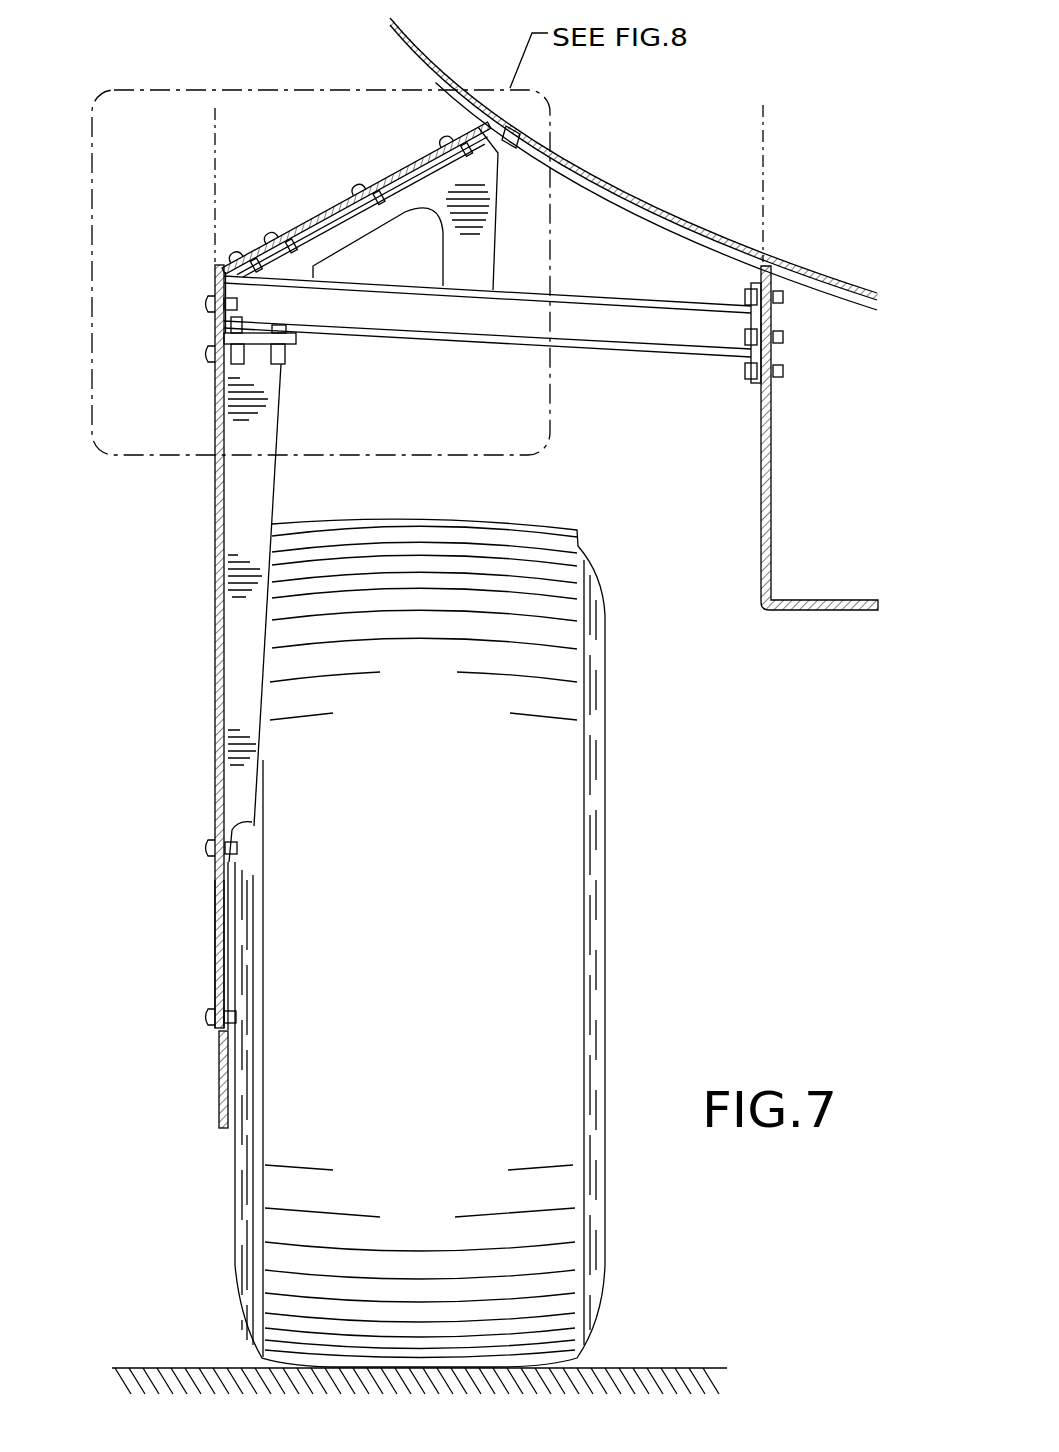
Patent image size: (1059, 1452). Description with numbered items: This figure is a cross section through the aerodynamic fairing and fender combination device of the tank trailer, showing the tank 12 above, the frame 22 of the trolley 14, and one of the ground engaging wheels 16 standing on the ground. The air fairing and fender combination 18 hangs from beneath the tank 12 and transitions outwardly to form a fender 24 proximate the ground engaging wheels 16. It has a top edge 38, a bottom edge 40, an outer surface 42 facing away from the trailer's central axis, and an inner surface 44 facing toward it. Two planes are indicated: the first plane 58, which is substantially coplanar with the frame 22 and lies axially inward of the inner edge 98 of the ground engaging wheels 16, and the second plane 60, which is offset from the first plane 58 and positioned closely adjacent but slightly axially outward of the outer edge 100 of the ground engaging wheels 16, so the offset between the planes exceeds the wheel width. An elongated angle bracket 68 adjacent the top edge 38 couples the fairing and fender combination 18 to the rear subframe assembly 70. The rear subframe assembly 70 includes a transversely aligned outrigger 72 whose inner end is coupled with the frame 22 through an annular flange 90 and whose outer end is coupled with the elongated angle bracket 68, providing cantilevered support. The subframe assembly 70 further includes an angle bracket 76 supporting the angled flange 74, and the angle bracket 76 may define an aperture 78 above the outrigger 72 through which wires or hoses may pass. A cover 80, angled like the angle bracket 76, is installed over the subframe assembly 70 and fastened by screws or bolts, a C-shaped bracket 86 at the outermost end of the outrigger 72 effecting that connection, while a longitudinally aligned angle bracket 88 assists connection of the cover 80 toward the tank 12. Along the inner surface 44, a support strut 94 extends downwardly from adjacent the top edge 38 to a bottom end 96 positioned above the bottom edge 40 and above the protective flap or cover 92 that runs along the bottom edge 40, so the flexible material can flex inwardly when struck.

The tank 12 is at (402, 45).
The trolley 14 is at (741, 438).
The frame 22 is at (759, 515).
The ground engaging wheels 16 is at (414, 943).
The air fairing and fender combination 18 is at (134, 646).
The fender 24 is at (216, 619).
The top edge 38 is at (174, 270).
The bottom edge 40 is at (184, 1103).
The outer surface 42 is at (215, 912).
The inner surface 44 is at (222, 948).
The first plane 58 is at (763, 176).
The second plane 60 is at (213, 178).
The elongated angle bracket 68 is at (222, 332).
The rear subframe assembly 70 is at (487, 351).
The outrigger 72 is at (596, 360).
The angled flange 74 is at (383, 190).
The angle bracket 76 is at (467, 270).
The aperture 78 is at (352, 262).
The cover 80 is at (353, 192).
The C-shaped bracket 86 is at (222, 290).
The longitudinally aligned angle bracket 88 is at (513, 146).
The annular flange 90 is at (753, 386).
The protective flap or cover 92 is at (220, 1140).
The support strut 94 is at (268, 497).
The bottom end 96 is at (236, 857).
The inner edge 98 is at (607, 627).
The outer edge 100 is at (237, 1247).